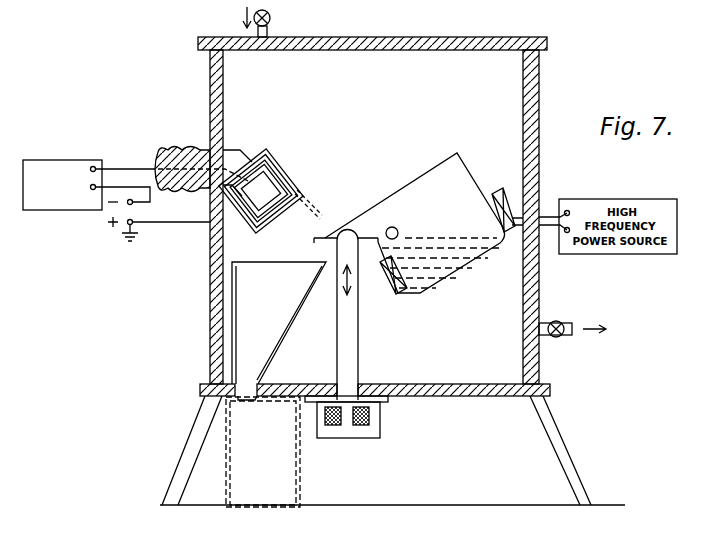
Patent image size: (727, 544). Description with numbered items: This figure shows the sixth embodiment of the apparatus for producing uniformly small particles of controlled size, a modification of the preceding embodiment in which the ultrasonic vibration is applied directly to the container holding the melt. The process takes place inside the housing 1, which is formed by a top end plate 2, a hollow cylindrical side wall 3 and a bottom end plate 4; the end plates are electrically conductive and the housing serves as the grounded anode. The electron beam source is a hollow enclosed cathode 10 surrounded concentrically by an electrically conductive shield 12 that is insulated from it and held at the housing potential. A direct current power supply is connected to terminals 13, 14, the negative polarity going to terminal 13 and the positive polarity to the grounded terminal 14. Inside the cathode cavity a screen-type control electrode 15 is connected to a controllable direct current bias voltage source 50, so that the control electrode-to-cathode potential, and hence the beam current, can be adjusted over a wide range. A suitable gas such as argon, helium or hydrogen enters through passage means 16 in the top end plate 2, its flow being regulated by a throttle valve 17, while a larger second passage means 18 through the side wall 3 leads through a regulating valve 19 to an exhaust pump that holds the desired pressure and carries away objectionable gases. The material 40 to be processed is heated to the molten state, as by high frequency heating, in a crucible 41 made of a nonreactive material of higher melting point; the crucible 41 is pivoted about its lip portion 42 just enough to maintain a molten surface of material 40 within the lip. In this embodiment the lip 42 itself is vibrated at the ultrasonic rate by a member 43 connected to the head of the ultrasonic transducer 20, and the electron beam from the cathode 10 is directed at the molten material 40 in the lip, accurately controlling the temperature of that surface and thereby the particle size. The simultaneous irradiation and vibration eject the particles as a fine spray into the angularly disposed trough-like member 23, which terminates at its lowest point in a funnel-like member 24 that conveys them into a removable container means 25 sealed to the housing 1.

The housing 1 is at (550, 91).
The top end plate 2 is at (547, 43).
The side wall 3 is at (539, 164).
The bottom end plate 4 is at (550, 390).
The hollow cathode 10 is at (274, 176).
The shield 12 is at (273, 171).
The negative terminal 13 is at (133, 203).
The positive terminal 14 is at (133, 224).
The control electrode 15 is at (261, 191).
The passage means 16 is at (267, 37).
The throttle valve 17 is at (270, 18).
The second passage means 18 is at (530, 330).
The regulating valve 19 is at (556, 322).
The ultrasonic transducer 20 is at (380, 432).
The trough-like member 23 is at (288, 326).
The funnel-like member 24 is at (250, 400).
The container means 25 is at (301, 478).
The molten material 40 is at (455, 265).
The crucible 41 is at (472, 163).
The lip portion 42 is at (336, 230).
The vibrating member 43 is at (359, 313).
The direct current bias voltage source 50 is at (38, 160).